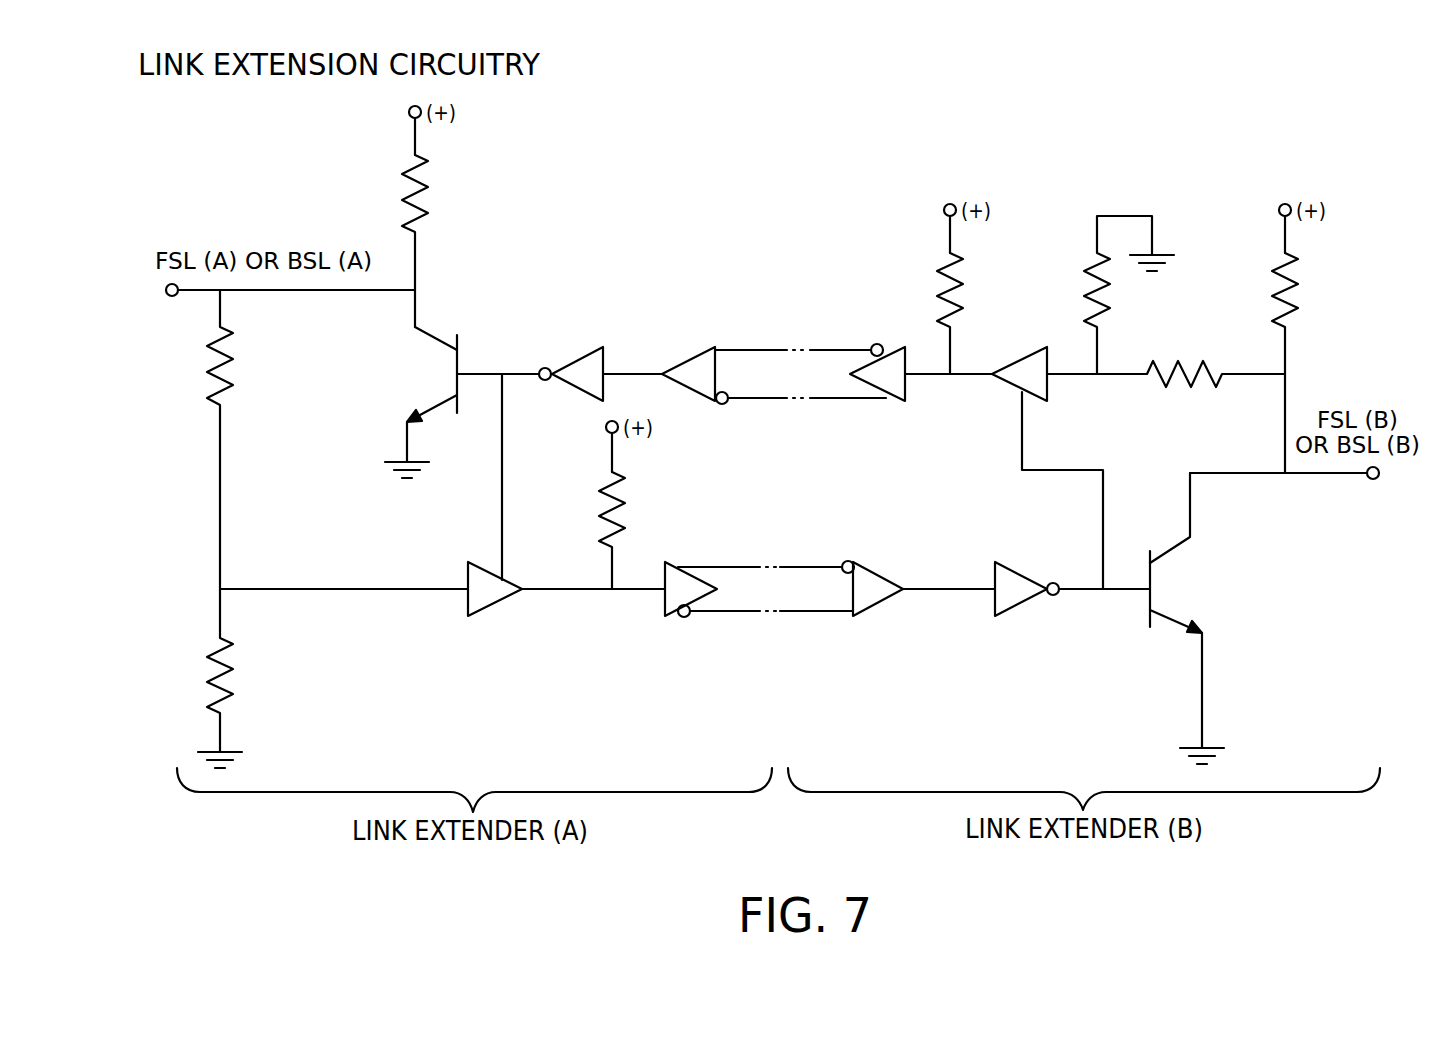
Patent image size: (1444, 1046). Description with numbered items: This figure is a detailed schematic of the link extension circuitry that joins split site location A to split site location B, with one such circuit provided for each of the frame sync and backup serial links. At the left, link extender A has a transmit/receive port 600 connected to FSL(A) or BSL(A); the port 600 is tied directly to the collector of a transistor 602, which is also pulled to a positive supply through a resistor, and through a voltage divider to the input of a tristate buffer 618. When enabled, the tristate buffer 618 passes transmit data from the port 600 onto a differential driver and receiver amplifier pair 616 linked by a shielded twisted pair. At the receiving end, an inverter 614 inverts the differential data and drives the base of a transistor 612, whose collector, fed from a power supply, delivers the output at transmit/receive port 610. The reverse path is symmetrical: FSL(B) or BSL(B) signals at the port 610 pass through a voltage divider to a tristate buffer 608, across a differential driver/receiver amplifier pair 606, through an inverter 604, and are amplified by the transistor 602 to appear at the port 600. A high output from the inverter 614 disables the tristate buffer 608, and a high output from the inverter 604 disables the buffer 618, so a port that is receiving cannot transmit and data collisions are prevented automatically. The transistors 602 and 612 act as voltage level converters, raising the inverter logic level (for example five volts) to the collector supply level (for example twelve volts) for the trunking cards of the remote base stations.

The transmit/receive port (A) 600 is at (172, 297).
The transistor 602 is at (440, 377).
The inverter 604 is at (572, 363).
The differential driver/receiver amplifier pair 606 is at (917, 358).
The tristate buffer 608 is at (1017, 355).
The transmit/receive port (B) 610 is at (1373, 480).
The transistor 612 is at (1186, 583).
The inverter 614 is at (1008, 602).
The differential driver and receiver amplifier pair 616 is at (905, 620).
The tristate buffer 618 is at (495, 603).